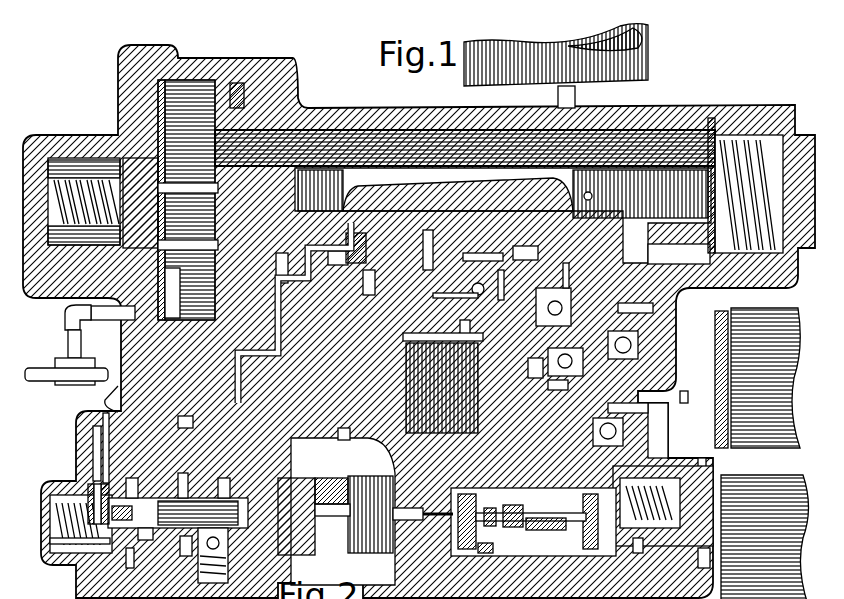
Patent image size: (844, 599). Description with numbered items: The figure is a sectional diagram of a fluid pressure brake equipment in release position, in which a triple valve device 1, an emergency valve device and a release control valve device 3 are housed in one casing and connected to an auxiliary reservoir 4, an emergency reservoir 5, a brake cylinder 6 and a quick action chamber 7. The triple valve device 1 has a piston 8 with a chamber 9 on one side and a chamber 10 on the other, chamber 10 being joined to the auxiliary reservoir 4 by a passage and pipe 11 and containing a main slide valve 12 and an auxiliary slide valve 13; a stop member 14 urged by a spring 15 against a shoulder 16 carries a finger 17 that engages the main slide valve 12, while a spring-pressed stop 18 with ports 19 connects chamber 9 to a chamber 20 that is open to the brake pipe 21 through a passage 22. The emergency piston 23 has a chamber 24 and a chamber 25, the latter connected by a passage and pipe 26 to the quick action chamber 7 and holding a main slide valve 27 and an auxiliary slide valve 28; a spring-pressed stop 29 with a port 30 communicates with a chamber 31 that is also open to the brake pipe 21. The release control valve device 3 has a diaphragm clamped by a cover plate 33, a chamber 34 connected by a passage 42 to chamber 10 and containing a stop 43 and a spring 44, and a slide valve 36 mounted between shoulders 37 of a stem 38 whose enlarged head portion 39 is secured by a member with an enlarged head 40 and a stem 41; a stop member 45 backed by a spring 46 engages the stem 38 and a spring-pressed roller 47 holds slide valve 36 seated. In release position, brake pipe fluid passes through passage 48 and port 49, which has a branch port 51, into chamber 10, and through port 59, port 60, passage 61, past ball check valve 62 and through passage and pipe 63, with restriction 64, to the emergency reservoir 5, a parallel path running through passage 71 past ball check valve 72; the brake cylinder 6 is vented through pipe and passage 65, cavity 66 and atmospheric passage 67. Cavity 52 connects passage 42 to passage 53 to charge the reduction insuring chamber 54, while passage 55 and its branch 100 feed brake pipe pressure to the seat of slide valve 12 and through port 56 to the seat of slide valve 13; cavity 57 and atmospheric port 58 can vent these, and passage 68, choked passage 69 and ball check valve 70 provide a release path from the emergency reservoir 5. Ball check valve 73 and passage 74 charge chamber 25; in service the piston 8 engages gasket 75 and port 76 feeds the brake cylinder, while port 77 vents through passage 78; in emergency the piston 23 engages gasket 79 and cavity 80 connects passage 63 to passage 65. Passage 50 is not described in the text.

The triple valve device 1 is at (292, 100).
The release control valve device 3 is at (42, 488).
The auxiliary reservoir 4 is at (537, 55).
The emergency reservoir 5 is at (752, 537).
The brake cylinder 6 is at (763, 392).
The quick action chamber 7 is at (342, 546).
The piston 8 is at (223, 76).
The chamber 9 is at (175, 100).
The chamber 10 is at (412, 140).
The passage and pipe 11 is at (552, 88).
The main slide valve 12 is at (313, 232).
The auxiliary slide valve 13 is at (385, 205).
The stop member 14 is at (722, 117).
The spring 15 is at (750, 130).
The shoulder 16 is at (687, 117).
The finger 17 is at (641, 244).
The spring-pressed stop 18 is at (163, 180).
The ports 19 is at (170, 180).
The chamber 20 is at (55, 247).
The brake pipe 21 is at (50, 360).
The passage 22 is at (58, 312).
The piston 23 is at (588, 487).
The chamber 24 is at (630, 453).
The chamber 25 is at (653, 427).
The passage and pipe 26 is at (386, 518).
The main slide valve 27 is at (585, 490).
The auxiliary slide valve 28 is at (482, 506).
The spring-pressed stop 29 is at (694, 454).
The port 30 is at (635, 492).
The chamber 31 is at (662, 477).
The cover plate 33 is at (72, 427).
The chamber 34 is at (83, 487).
The slide valve 36 is at (180, 548).
The shoulders 37 is at (342, 520).
The stem 38 is at (137, 531).
The enlarged head portion 39 is at (100, 480).
The enlarged head 40 is at (90, 483).
The stem 41 is at (123, 558).
The passage 42 is at (70, 405).
The stop 43 is at (42, 516).
The spring 44 is at (48, 537).
The stop member 45 is at (342, 482).
The spring 46 is at (343, 504).
The spring-pressed roller 47 is at (260, 533).
The passage 48 is at (287, 340).
The port 49 is at (347, 254).
The passage 50 is at (274, 267).
The port 51 is at (326, 252).
The cavity 52 is at (240, 492).
The passage 53 is at (334, 432).
The reduction insuring chamber 54 is at (442, 388).
The passage 55 is at (362, 270).
The port 56 is at (424, 233).
The cavity 57 is at (143, 490).
The atmospheric port 58 is at (177, 480).
The port 59 is at (553, 198).
The port 60 is at (572, 225).
The passage 61 is at (559, 280).
The ball check valve 62 is at (545, 292).
The passage and pipe 63 is at (520, 358).
The restriction 64 is at (491, 270).
The pipe and passage 65 is at (456, 326).
The cavity 66 is at (462, 253).
The atmospheric passage 67 is at (432, 290).
The passage 68 is at (450, 320).
The choked passage 69 is at (545, 380).
The ball check valve 70 is at (564, 354).
The passage 71 is at (644, 307).
The ball check valve 72 is at (624, 337).
The ball check valve 73 is at (605, 417).
The passage 74 is at (585, 425).
The gasket 75 is at (164, 282).
The port 76 is at (525, 247).
The port 77 is at (503, 503).
The passage 78 is at (487, 538).
The gasket 79 is at (627, 539).
The cavity 80 is at (517, 517).
The branch 100 is at (464, 281).